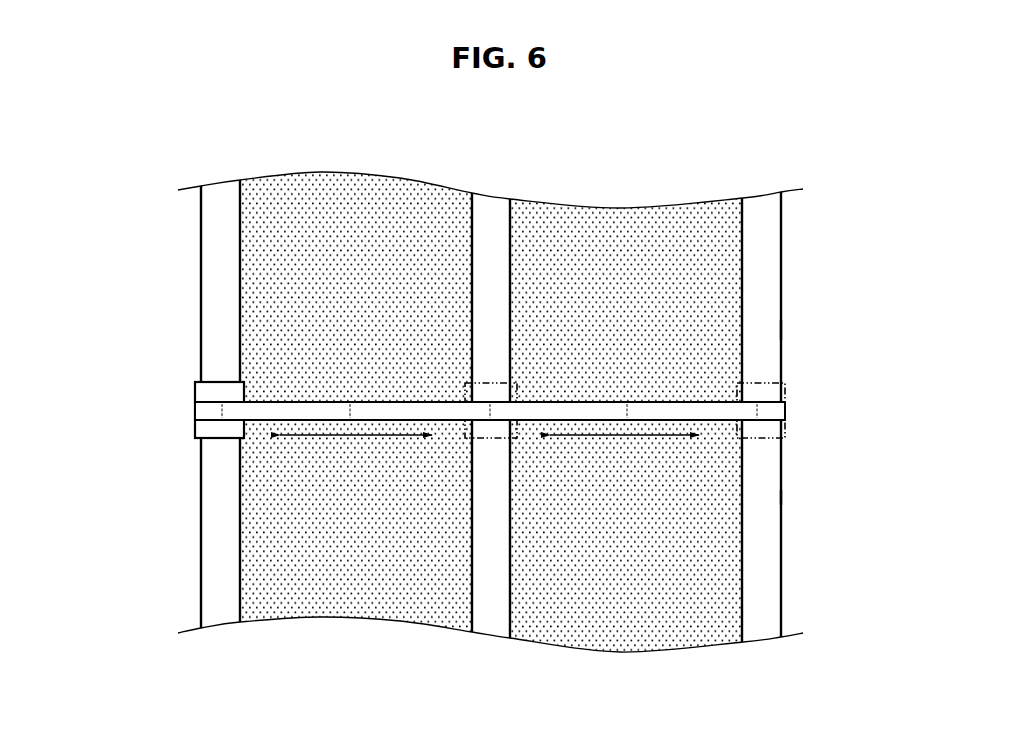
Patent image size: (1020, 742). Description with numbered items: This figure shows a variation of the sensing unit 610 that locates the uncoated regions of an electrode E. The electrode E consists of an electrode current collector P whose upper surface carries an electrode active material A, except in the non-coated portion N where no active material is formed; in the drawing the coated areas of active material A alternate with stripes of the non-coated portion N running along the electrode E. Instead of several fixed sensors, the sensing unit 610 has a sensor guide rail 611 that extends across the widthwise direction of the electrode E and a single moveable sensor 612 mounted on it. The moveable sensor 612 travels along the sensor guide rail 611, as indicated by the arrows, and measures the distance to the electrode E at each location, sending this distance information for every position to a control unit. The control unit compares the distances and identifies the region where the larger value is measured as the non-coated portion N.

The sensing unit 610 is at (499, 376).
The sensor guide rail 611 is at (197, 413).
The moveable sensor 612 is at (197, 387).
The electrode active material A is at (354, 212).
The non-coated portion N is at (221, 612).
The electrode E is at (790, 331).
The electrode current collector P is at (783, 497).